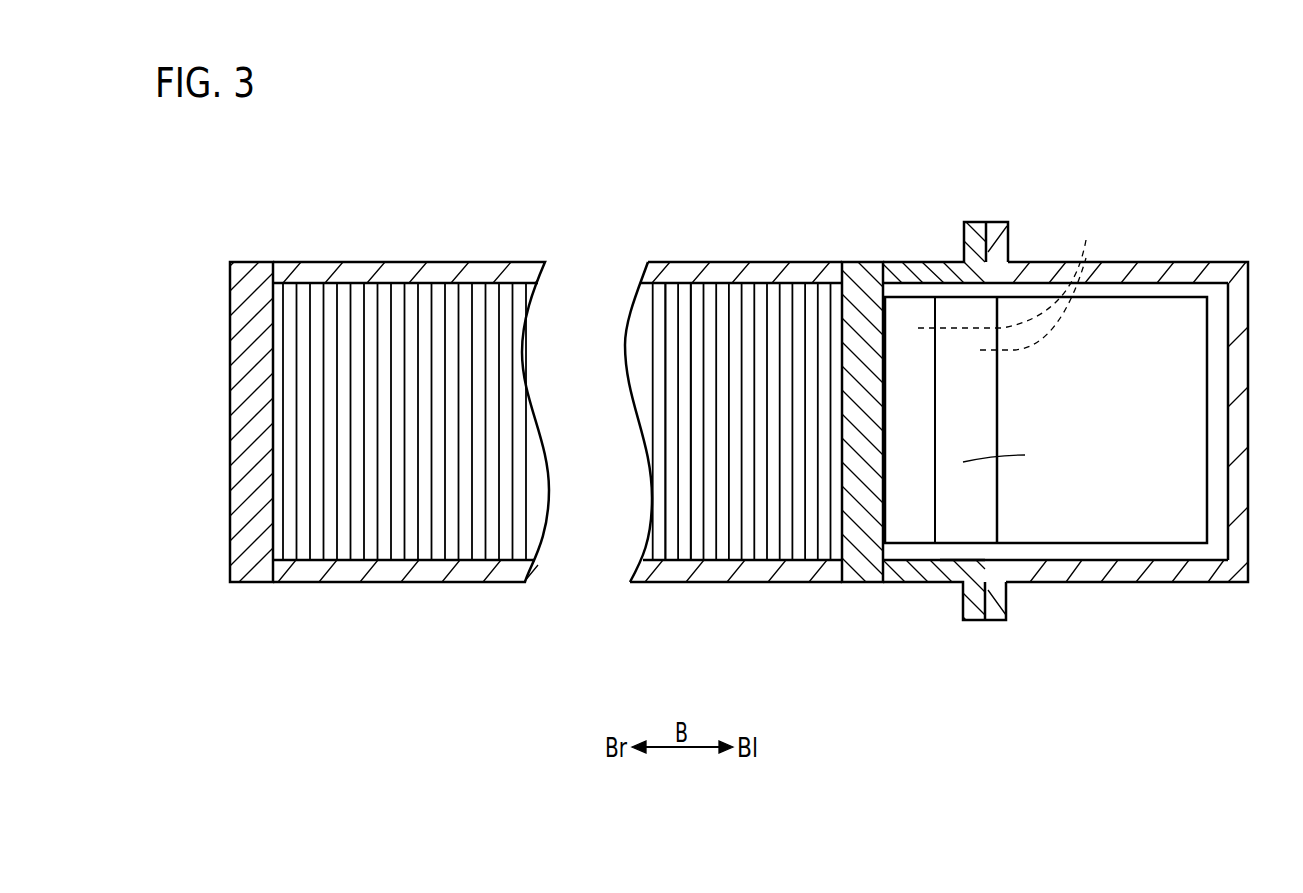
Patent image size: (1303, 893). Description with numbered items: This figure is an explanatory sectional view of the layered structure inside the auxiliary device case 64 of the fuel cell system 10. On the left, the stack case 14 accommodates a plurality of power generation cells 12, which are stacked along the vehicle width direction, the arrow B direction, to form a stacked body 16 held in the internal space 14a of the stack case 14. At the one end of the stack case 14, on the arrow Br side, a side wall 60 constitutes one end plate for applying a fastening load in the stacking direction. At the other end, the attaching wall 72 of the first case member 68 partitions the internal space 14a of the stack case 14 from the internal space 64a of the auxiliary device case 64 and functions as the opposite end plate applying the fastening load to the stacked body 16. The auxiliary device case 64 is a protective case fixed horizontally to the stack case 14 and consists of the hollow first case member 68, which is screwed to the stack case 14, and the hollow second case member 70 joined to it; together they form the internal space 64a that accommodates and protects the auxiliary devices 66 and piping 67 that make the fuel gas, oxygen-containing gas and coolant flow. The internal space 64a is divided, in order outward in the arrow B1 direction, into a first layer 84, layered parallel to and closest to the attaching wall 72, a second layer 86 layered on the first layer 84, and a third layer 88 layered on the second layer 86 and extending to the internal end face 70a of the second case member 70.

The fuel cell system 10 is at (401, 250).
The power generation cell 12 is at (697, 290).
The stacked body 16 is at (672, 290).
The stack case 14 is at (317, 277).
The internal space of the stack case 14a is at (697, 560).
The side wall 60 is at (252, 277).
The attaching wall 72 is at (858, 280).
The auxiliary device case 64 is at (1028, 167).
The internal space of the auxiliary device case 64a is at (960, 557).
The auxiliary device 66 is at (1090, 343).
The piping 67 is at (1089, 343).
The first case member 68 is at (913, 262).
The second case member 70 is at (1040, 262).
The internal end face of the second case member 70a is at (1227, 380).
The first layer 84 is at (912, 532).
The second layer 86 is at (985, 532).
The third layer 88 is at (1170, 525).